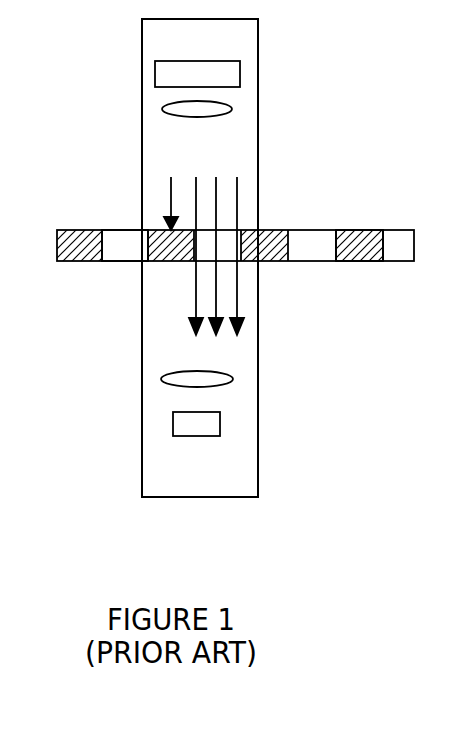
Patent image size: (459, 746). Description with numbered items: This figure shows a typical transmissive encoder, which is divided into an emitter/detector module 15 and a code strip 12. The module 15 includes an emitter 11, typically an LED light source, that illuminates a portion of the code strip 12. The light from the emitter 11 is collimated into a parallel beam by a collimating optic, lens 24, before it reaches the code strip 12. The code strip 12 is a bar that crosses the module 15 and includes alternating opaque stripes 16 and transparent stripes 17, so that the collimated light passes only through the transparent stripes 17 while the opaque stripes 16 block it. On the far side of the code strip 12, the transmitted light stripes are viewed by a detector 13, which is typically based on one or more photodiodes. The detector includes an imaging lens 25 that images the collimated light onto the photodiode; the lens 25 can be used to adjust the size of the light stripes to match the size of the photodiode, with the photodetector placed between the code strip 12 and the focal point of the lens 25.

The emitter 11 is at (156, 86).
The code strip 12 is at (404, 262).
The detector 13 is at (195, 436).
The emitter/detector module 15 is at (258, 170).
The opaque stripes 16 is at (345, 262).
The transparent stripes 17 is at (122, 262).
The lens 24 is at (232, 107).
The imaging lens 25 is at (233, 378).